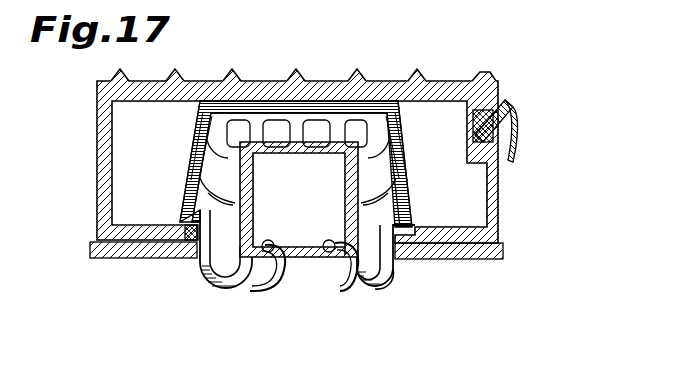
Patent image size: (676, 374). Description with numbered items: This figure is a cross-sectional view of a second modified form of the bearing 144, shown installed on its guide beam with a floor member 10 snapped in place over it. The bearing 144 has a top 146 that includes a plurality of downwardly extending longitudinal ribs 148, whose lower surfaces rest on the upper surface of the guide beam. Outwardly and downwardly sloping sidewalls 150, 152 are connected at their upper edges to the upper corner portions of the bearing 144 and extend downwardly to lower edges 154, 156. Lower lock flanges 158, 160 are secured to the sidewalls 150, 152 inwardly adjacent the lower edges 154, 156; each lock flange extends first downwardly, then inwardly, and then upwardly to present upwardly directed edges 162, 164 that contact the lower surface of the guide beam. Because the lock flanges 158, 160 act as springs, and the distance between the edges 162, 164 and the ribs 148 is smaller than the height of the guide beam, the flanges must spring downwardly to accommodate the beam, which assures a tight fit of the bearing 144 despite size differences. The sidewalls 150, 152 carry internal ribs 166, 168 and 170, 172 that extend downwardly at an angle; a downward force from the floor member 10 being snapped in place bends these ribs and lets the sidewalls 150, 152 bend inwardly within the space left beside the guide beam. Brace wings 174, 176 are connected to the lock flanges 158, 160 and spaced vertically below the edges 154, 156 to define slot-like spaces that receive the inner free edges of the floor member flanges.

The floor member 10 is at (205, 72).
The top 146 is at (317, 112).
The bearing 144 is at (413, 131).
The internal rib 166 is at (223, 150).
The sidewall 150 is at (188, 167).
The internal rib 168 is at (182, 210).
The longitudinal rib 148 is at (333, 150).
The internal rib 170 is at (393, 160).
The sidewall 152 is at (410, 183).
The internal rib 172 is at (397, 207).
The brace wing 174 is at (120, 258).
The lower edge 154 is at (168, 260).
The lock flange 158 is at (228, 290).
The upwardly directed edge 162 is at (268, 267).
The upwardly directed edge 164 is at (327, 273).
The lock flange 160 is at (368, 293).
The lower edge 156 is at (410, 243).
The brace wing 176 is at (477, 263).